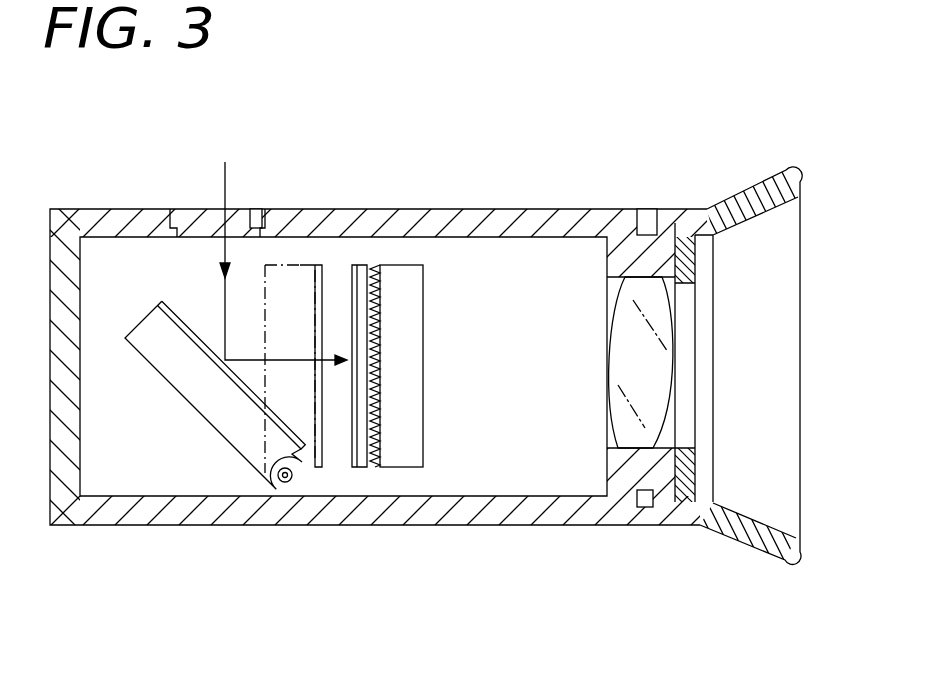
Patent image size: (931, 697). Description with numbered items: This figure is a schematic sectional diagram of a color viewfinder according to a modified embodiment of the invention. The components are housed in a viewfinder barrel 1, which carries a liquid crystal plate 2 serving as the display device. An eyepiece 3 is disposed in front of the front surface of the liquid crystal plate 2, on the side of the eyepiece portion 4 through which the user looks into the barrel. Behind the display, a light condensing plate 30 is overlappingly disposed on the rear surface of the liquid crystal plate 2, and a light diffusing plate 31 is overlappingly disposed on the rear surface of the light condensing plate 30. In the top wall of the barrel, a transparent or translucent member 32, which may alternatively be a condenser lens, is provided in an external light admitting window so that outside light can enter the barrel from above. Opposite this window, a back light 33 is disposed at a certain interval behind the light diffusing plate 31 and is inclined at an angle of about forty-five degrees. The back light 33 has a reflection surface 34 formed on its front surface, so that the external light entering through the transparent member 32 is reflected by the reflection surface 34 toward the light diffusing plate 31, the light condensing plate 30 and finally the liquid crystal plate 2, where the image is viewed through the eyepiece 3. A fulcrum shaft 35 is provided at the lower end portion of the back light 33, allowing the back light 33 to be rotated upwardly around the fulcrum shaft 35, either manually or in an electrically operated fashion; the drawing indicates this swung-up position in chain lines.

The viewfinder barrel 1 is at (578, 207).
The liquid crystal plate 2 is at (408, 357).
The eyepiece 3 is at (655, 362).
The eyepiece portion 4 is at (760, 202).
The light condensing plate 30 is at (375, 265).
The light diffusing plate 31 is at (358, 265).
The transparent member 32 is at (250, 210).
The back light 33 is at (277, 300).
The reflection surface 34 is at (181, 318).
The fulcrum shaft 35 is at (285, 482).